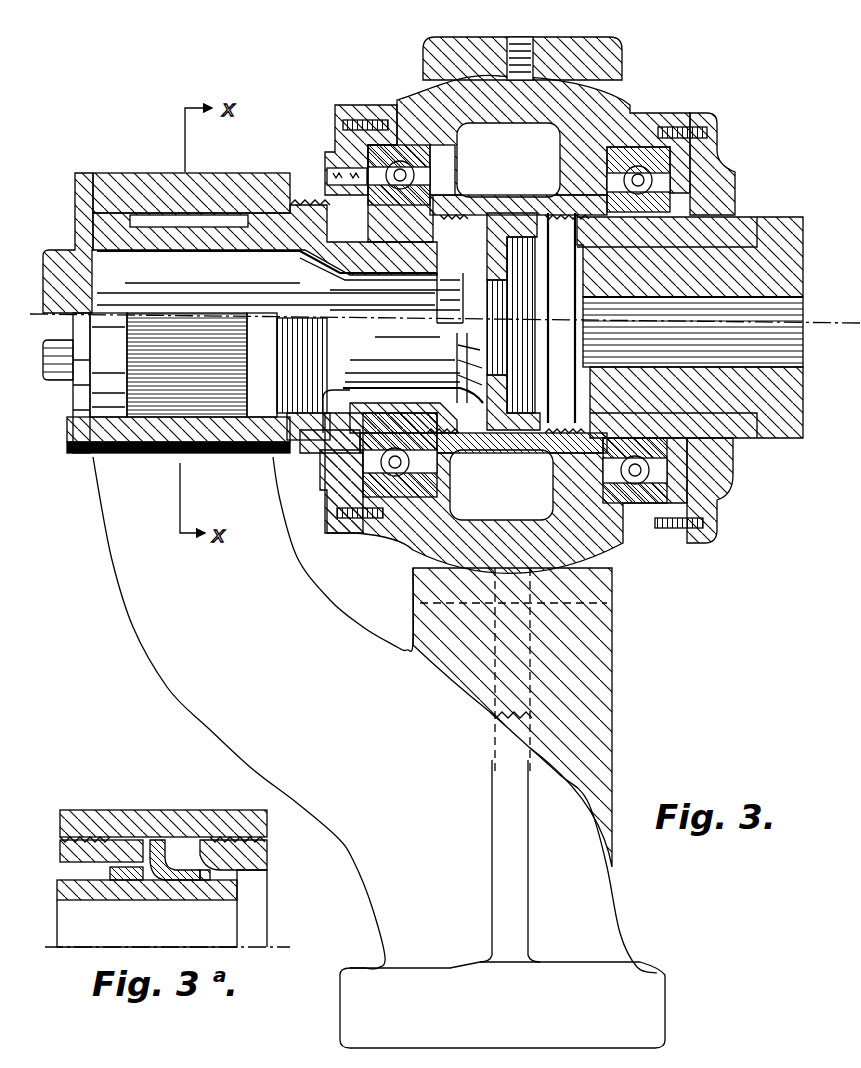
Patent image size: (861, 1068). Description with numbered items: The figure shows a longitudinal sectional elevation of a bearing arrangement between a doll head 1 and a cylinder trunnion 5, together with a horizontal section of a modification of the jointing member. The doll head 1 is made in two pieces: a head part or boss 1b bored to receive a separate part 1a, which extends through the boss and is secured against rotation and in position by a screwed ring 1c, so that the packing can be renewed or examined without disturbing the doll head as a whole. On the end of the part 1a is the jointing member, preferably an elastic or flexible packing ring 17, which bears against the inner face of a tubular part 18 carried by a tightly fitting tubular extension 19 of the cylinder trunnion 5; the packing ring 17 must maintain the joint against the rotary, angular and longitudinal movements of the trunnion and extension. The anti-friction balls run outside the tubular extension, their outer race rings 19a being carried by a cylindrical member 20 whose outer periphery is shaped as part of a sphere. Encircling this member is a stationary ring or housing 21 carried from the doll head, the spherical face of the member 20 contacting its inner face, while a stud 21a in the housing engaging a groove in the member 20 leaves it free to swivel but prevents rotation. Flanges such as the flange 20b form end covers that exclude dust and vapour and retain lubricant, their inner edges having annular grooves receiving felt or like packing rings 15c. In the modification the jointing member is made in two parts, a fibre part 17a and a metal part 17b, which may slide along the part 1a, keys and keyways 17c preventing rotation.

In FIG. 3, the doll head 1 is at (379, 739).
In FIG. 3, the part of the doll head 1a is at (390, 355).
In FIG. 3A, the part of the doll head 1a is at (105, 895).
In FIG. 3, the head part or boss 1b is at (137, 173).
In FIG. 3, the screwed ring 1c is at (300, 300).
In FIG. 3, the cylinder trunnion 5 is at (768, 302).
In FIG. 3, the felt or like packing rings 15c is at (327, 180).
In FIG. 3, the packing ring 17 is at (500, 228).
In FIG. 3A, the fibre part of jointing member 17a is at (178, 868).
In FIG. 3A, the metal part of jointing member 17b is at (204, 882).
In FIG. 3A, the keys and keyways 17c is at (90, 877).
In FIG. 3, the tubular part 18 is at (507, 198).
In FIG. 3A, the tubular part 18 is at (187, 810).
In FIG. 3, the tubular extension 19 is at (748, 216).
In FIG. 3, the outer race rings 19a is at (440, 158).
In FIG. 3, the cylindrical member 20 is at (506, 324).
In FIG. 3, the end cover flange 20b is at (745, 500).
In FIG. 3, the stationary ring or housing 21 is at (565, 37).
In FIG. 3, the stud 21a is at (517, 36).